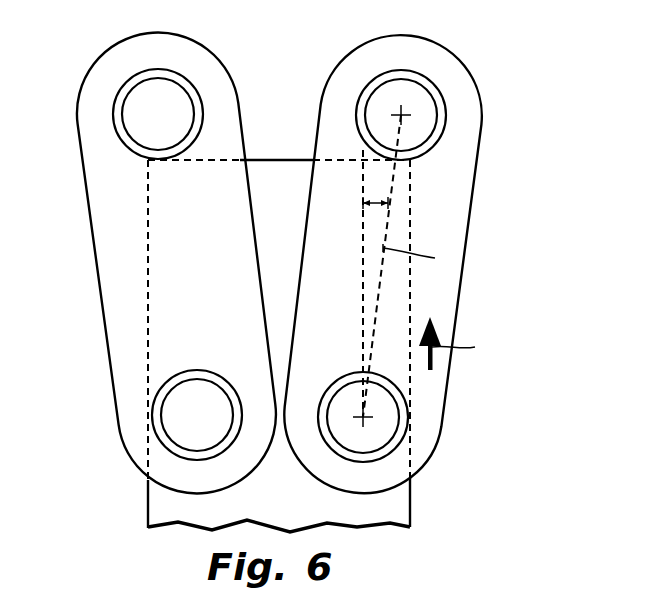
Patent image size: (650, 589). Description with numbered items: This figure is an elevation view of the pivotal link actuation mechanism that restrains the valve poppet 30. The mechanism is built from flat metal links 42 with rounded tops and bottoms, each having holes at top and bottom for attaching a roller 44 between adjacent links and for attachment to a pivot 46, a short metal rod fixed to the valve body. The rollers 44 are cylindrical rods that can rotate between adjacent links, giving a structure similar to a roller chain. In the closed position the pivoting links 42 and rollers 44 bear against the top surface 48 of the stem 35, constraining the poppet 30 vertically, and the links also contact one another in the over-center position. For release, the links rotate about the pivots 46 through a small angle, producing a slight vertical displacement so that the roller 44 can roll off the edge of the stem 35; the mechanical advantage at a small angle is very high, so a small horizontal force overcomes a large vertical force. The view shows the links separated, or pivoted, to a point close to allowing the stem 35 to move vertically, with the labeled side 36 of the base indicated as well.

The poppet 30 is at (118, 502).
The stem 35 is at (410, 505).
The side of base 36 is at (148, 483).
The link 42 is at (480, 171).
The roller 44 is at (418, 124).
The pivot 46 is at (385, 418).
The top surface 48 is at (287, 160).